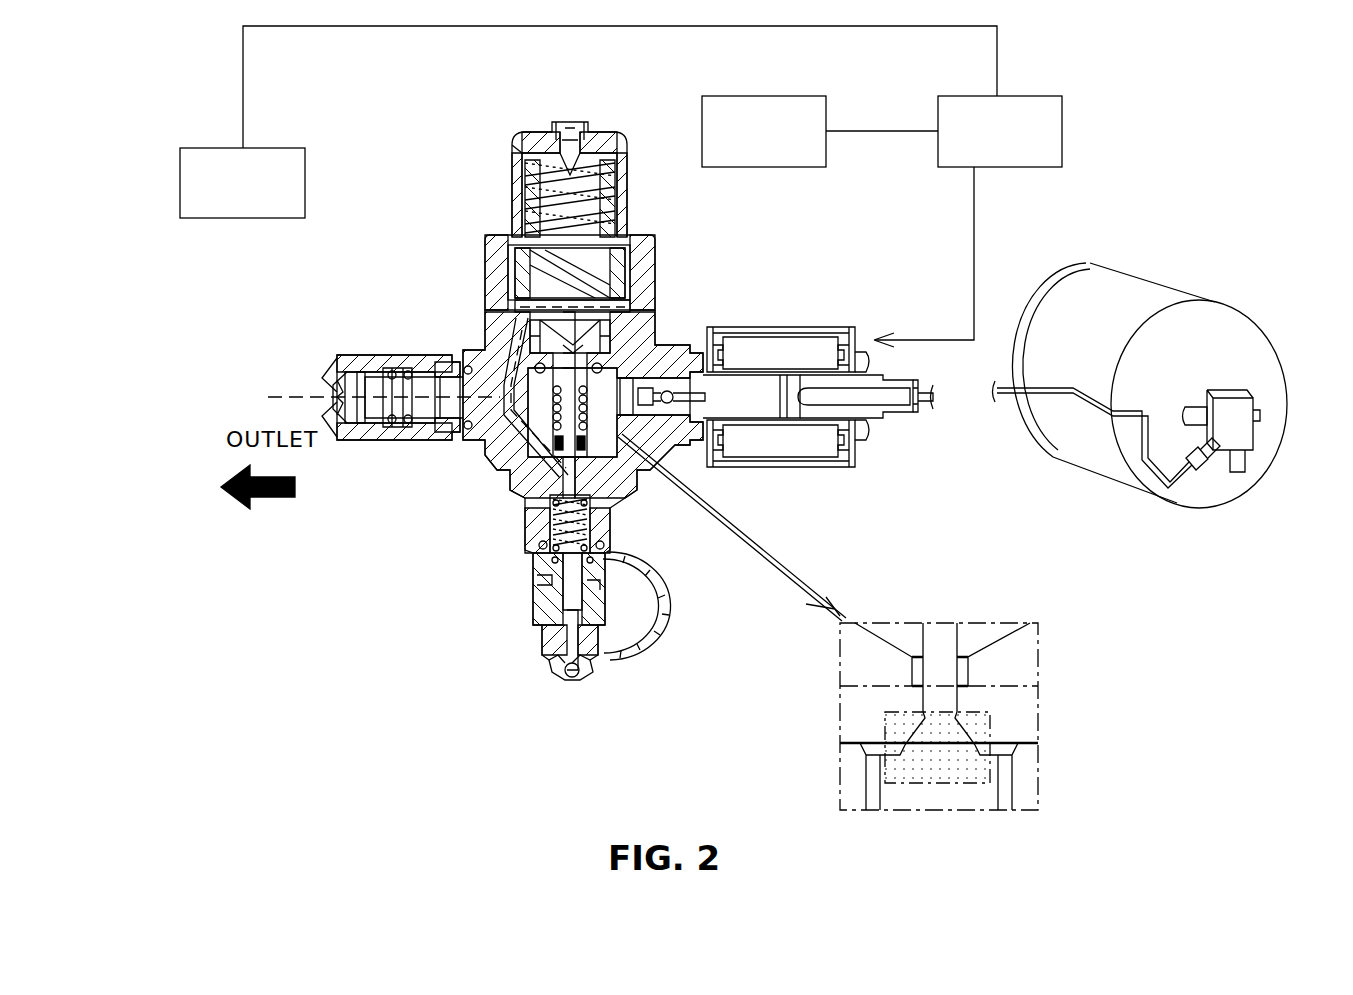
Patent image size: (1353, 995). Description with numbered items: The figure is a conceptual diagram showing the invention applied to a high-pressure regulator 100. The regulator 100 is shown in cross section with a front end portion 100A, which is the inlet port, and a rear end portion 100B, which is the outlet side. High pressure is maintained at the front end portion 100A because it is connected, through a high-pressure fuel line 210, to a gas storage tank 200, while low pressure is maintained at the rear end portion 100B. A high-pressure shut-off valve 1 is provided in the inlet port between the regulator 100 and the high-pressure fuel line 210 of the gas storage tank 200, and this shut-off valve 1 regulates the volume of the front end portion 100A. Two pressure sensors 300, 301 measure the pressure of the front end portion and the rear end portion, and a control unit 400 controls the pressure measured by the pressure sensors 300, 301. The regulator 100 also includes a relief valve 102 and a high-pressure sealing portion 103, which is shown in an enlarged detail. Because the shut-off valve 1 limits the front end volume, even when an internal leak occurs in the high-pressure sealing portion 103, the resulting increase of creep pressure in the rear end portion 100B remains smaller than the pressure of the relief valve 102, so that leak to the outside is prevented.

The shut-off valve 1 is at (806, 342).
The high-pressure regulator 100 is at (680, 433).
The front end portion 100A is at (815, 325).
The rear end portion 100B is at (437, 349).
The relief valve 102 is at (497, 470).
The high-pressure sealing portion 103 is at (886, 760).
The gas storage tank 200 is at (1135, 368).
The high-pressure fuel line 210 is at (1033, 397).
The pressure sensor 300 is at (198, 147).
The pressure sensor 301 is at (806, 96).
The control unit 400 is at (1044, 96).